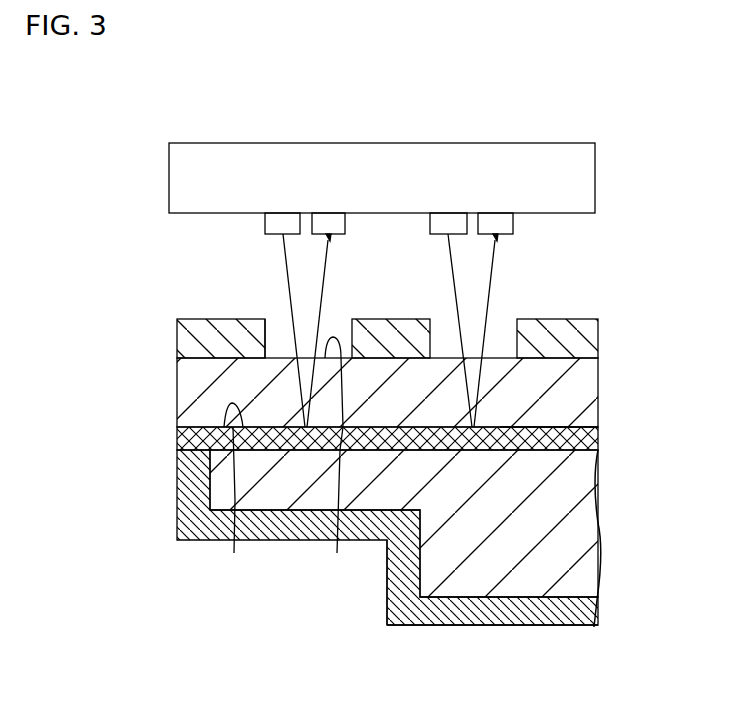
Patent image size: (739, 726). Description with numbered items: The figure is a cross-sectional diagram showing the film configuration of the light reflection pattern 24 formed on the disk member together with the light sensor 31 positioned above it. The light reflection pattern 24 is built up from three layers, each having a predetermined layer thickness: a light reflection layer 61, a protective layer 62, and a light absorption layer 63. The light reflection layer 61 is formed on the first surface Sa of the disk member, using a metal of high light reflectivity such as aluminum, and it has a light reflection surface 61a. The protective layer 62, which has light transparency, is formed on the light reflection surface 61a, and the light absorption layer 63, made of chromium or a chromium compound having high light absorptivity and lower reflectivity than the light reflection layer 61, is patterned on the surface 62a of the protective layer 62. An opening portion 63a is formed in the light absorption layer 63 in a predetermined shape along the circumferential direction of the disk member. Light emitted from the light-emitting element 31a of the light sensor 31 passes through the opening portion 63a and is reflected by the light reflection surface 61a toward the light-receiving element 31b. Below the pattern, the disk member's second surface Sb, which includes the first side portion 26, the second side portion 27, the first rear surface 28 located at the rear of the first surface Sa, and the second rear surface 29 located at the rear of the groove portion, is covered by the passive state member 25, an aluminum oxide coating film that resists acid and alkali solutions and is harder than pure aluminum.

The light sensor 31 is at (160, 134).
The light-emitting element 31a is at (280, 213).
The light-receiving element 31b is at (336, 213).
The light reflection pattern 24 is at (312, 387).
The light absorption layer 63 is at (177, 340).
The protective layer 62 is at (177, 394).
The light reflection layer 61 is at (336, 441).
The opening portion 63a is at (272, 328).
The surface of the protective layer 62a is at (344, 460).
The light reflection surface 61a is at (229, 493).
The first surface Sa is at (582, 427).
The second surface Sb is at (365, 588).
The first side portion 26 is at (183, 503).
The first rear surface 28 is at (263, 540).
The second side portion 27 is at (387, 568).
The second rear surface 29 is at (444, 654).
The passive state member 25 is at (553, 627).